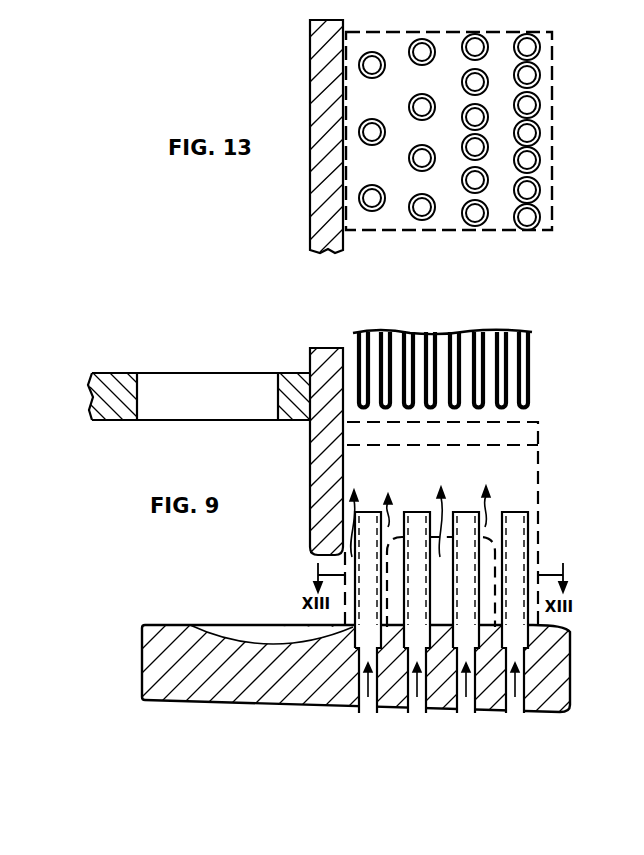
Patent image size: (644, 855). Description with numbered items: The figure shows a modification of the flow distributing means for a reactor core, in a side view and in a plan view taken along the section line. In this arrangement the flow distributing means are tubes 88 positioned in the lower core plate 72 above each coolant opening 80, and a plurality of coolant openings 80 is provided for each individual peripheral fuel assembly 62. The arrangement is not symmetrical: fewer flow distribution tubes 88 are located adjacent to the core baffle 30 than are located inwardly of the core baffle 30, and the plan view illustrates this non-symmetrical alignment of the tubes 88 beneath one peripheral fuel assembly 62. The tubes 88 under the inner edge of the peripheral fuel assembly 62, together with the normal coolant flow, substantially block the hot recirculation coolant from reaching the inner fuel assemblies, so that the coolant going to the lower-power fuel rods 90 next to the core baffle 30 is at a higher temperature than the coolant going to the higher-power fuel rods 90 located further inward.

In FIG. 13, the core baffle 30 is at (326, 70).
In FIG. 9, the core baffle 30 is at (318, 453).
In FIG. 13, the peripheral fuel assembly 62 is at (553, 80).
In FIG. 9, the lower core plate 72 is at (560, 661).
In FIG. 9, the coolant opening 80 is at (420, 701).
In FIG. 13, the flow distribution tube 88 is at (372, 199).
In FIG. 9, the flow distribution tube 88 is at (415, 511).
In FIG. 9, the fuel rod 90 is at (357, 338).